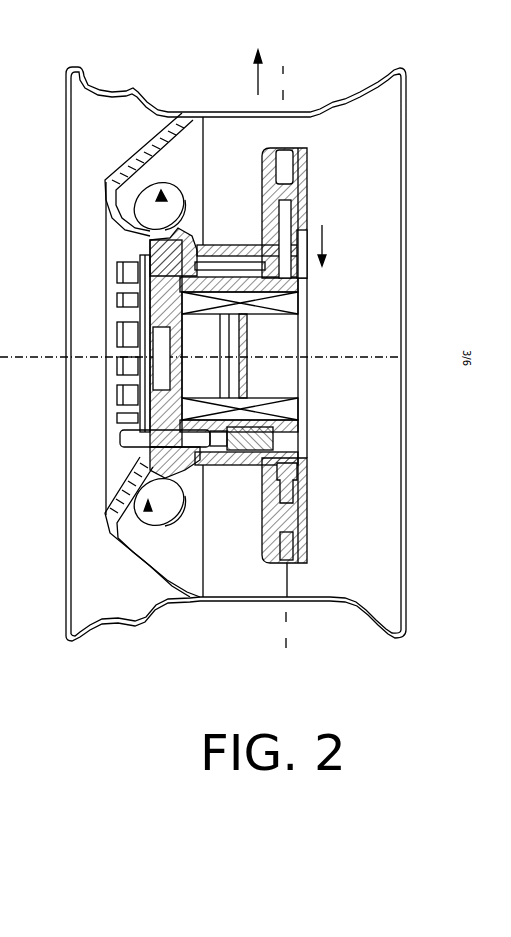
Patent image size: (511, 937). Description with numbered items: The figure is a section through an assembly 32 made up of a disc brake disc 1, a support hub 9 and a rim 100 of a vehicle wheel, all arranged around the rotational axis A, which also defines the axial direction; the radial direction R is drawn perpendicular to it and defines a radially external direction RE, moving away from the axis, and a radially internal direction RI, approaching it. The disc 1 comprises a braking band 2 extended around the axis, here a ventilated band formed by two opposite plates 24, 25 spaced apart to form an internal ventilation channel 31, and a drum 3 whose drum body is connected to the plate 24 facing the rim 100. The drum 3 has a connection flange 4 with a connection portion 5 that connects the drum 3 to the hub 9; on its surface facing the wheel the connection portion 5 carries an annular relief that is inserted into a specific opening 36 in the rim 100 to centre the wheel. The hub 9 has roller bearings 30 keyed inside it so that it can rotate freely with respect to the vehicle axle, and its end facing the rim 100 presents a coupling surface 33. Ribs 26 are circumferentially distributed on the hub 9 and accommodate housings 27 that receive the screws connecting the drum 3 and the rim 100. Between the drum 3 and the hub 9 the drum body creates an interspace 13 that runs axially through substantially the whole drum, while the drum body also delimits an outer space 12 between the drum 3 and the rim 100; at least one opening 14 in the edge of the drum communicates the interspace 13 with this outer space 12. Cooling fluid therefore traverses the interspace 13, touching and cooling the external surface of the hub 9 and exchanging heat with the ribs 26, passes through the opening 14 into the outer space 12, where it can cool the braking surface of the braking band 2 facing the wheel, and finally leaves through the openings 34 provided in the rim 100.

The disc brake disc 1 is at (336, 177).
The braking band 2 is at (270, 150).
The drum 3 is at (218, 260).
The connection flange 4 is at (115, 434).
The connection portion 5 is at (150, 278).
The support hub 9 is at (268, 442).
The outer space 12 is at (246, 163).
The interspace 13 is at (259, 266).
The opening 14 is at (142, 244).
The plate 24 is at (260, 535).
The plate 25 is at (312, 533).
The ribs 26 is at (238, 262).
The housings 27 is at (219, 466).
The roller bearings 30 is at (255, 396).
The internal ventilation channel 31 is at (287, 150).
The assembly 32 is at (353, 533).
The coupling surface 33 is at (118, 311).
The openings 34 is at (164, 192).
The opening 36 is at (120, 301).
The rim 100 is at (154, 163).
The rotational axis A is at (63, 357).
The radial direction R is at (285, 72).
The radially external direction RE is at (254, 75).
The radially internal direction RI is at (330, 240).